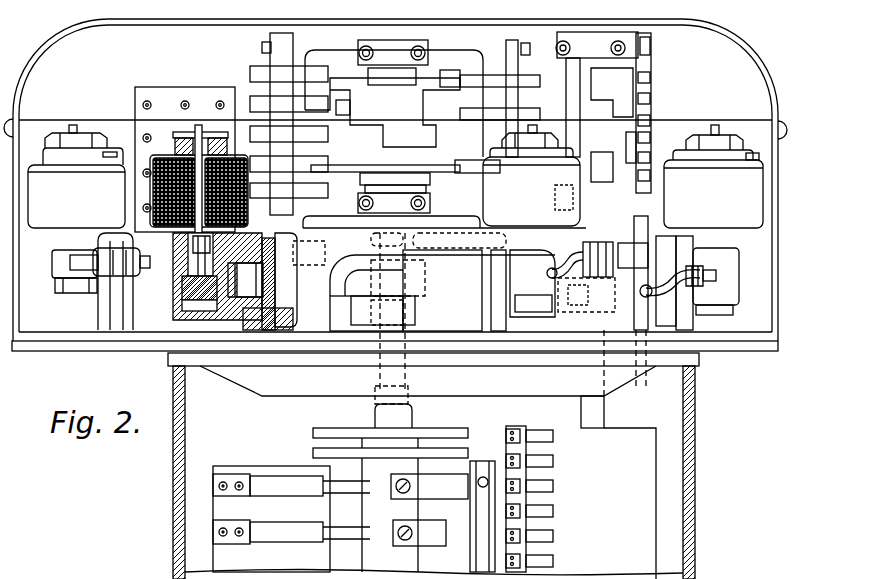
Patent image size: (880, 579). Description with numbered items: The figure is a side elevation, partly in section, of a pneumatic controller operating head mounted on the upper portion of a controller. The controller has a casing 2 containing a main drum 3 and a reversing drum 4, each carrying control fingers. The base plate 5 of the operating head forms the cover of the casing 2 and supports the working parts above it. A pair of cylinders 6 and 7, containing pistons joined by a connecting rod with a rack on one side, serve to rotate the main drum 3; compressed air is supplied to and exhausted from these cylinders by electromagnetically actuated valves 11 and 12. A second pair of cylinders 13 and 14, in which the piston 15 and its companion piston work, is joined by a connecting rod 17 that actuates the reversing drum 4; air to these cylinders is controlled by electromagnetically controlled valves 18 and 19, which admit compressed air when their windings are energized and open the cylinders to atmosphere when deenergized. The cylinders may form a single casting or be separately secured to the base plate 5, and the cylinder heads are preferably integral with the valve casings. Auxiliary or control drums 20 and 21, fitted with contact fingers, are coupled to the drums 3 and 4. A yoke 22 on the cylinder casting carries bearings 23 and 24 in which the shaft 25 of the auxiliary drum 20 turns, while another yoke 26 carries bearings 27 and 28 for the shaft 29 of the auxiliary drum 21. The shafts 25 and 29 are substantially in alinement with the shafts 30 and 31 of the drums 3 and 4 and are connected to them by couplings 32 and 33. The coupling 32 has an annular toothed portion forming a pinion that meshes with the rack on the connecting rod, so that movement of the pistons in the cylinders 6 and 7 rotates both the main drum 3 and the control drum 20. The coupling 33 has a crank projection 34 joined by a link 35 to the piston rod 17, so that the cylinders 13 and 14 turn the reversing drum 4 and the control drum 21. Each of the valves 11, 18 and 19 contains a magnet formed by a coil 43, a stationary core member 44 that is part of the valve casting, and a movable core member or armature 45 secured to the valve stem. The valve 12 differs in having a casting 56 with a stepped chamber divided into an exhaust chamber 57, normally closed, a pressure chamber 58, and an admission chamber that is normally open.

The casing 2 is at (174, 485).
The main drum 3 is at (373, 416).
The reversing drum 4 is at (636, 436).
The base plate 5 is at (162, 342).
The cylinder 6 is at (122, 306).
The cylinder 7 is at (666, 246).
The electromagnetically actuated valve 11 is at (62, 157).
The electromagnetically actuated valve 12 is at (709, 155).
The cylinder 13 is at (276, 282).
The cylinder 14 is at (487, 319).
The piston 15 is at (265, 252).
The connecting rod 17 is at (300, 320).
The electromagnetically controlled valve 18 is at (168, 174).
The electromagnetically controlled valve 19 is at (515, 212).
The auxiliary or control drum 20 is at (442, 106).
The auxiliary or control drum 21 is at (607, 98).
The yoke 22 is at (270, 50).
The bearing 23 is at (385, 50).
The bearing 24 is at (411, 191).
The shaft 25 is at (425, 206).
The yoke 26 is at (636, 60).
The bearing 27 is at (585, 42).
The bearing 28 is at (603, 195).
The shaft 29 is at (588, 251).
The shaft 30 is at (410, 399).
The shaft 31 is at (596, 407).
The coupling 32 is at (421, 283).
The coupling 33 is at (628, 275).
The crank projection 34 is at (580, 308).
The link 35 is at (532, 283).
The coil 43 is at (150, 184).
The stationary core member 44 is at (148, 205).
The movable core member or armature 45 is at (180, 150).
The casting 56 is at (182, 280).
The exhaust chamber 57 is at (192, 240).
The pressure chamber 58 is at (205, 276).